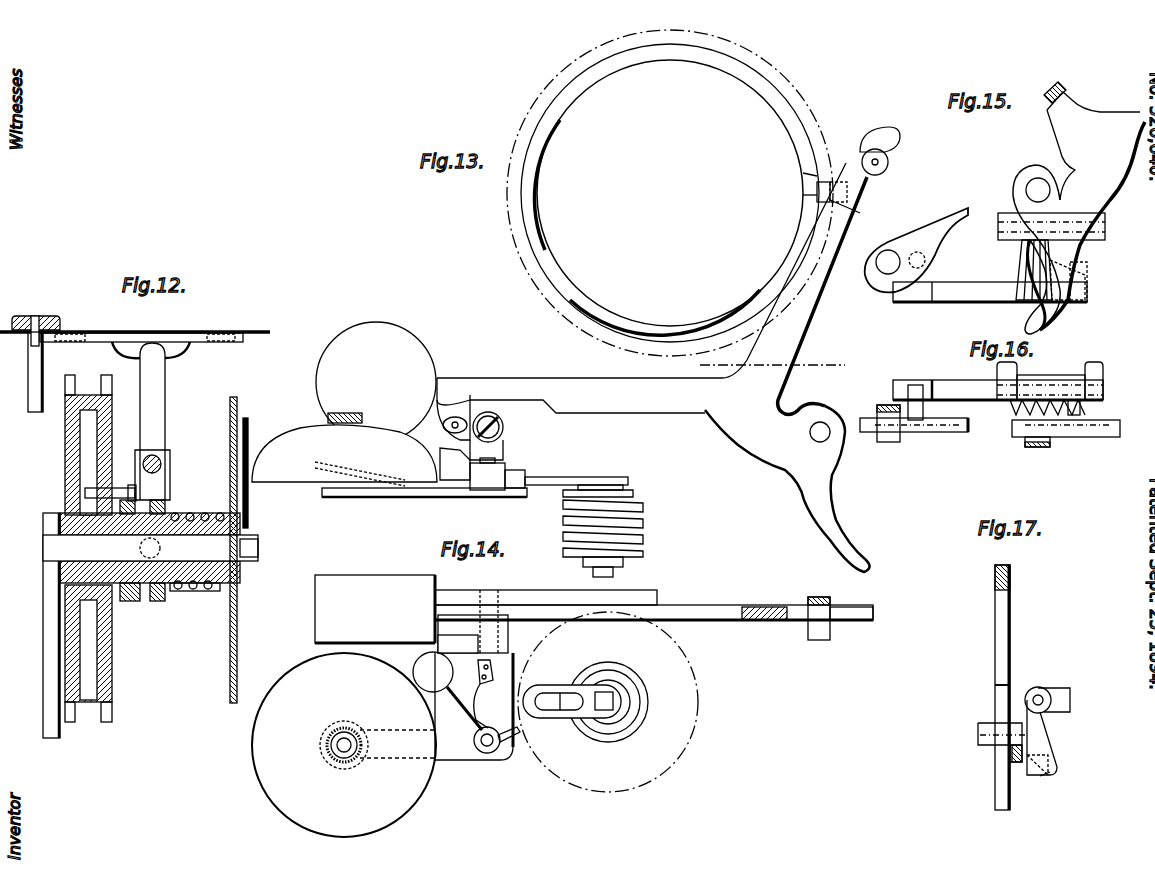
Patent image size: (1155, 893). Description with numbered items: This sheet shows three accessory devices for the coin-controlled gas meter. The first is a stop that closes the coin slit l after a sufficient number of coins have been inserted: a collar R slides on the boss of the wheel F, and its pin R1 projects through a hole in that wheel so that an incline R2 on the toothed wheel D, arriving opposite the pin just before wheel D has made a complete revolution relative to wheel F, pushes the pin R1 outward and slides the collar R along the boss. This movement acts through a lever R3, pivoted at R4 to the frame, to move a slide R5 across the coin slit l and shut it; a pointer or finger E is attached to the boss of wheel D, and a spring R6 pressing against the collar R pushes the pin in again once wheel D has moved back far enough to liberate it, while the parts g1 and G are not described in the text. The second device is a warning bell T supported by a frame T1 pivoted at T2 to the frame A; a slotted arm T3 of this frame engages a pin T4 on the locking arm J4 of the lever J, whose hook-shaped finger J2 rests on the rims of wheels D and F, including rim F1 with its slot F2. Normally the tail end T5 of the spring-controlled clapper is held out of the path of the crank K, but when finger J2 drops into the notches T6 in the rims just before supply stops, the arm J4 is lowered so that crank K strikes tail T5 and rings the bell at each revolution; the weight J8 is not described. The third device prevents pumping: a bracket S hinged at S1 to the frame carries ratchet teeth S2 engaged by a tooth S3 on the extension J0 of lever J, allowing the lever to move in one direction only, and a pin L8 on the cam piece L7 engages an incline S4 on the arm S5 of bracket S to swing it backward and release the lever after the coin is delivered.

In FIG. 12, the coin slit l is at (35, 320).
In FIG. 12, the hanger bar g1 is at (28, 382).
In FIG. 12, the slide R5 is at (112, 343).
In FIG. 12, the lever R3 is at (158, 399).
In FIG. 12, the pivot R4 is at (161, 464).
In FIG. 12, the toothed wheel D is at (66, 450).
In FIG. 12, the wheel F is at (105, 398).
In FIG. 12, the pin R1 is at (112, 487).
In FIG. 12, the collar R is at (160, 507).
In FIG. 12, the pointer or finger E is at (240, 522).
In FIG. 12, the incline R2 is at (88, 610).
In FIG. 12, the spring R6 is at (176, 592).
In FIG. 12, the frame bar G is at (230, 652).
In FIG. 13, the rim or flange F1 is at (776, 97).
In FIG. 13, the slot or groove F2 is at (820, 182).
In FIG. 13, the hook-shaped finger J2 is at (815, 190).
In FIG. 13, the notches or depressions T6 is at (852, 210).
In FIG. 15, the notches or depressions T6 is at (880, 173).
In FIG. 13, the lever J is at (794, 281).
In FIG. 14, the lever J is at (758, 620).
In FIG. 15, the lever J is at (1079, 208).
In FIG. 16, the lever J is at (1102, 428).
In FIG. 17, the lever J is at (1000, 627).
In FIG. 13, the extension of lever J J0 is at (803, 512).
In FIG. 14, the extension of lever J J0 is at (868, 620).
In FIG. 15, the extension of lever J J0 is at (1048, 285).
In FIG. 17, the extension of lever J J0 is at (1000, 790).
In FIG. 13, the locking arm J4 is at (579, 395).
In FIG. 14, the locking arm J4 is at (590, 612).
In FIG. 13, the weight J8 is at (376, 382).
In FIG. 14, the weight J8 is at (375, 609).
In FIG. 13, the bell T is at (344, 449).
In FIG. 14, the bell T is at (344, 745).
In FIG. 13, the bell frame T1 is at (358, 490).
In FIG. 14, the bell frame T1 is at (448, 750).
In FIG. 13, the pivot T2 is at (503, 428).
In FIG. 13, the slotted arm T3 is at (451, 415).
In FIG. 14, the slotted arm T3 is at (450, 615).
In FIG. 13, the pin T4 is at (450, 455).
In FIG. 14, the pin T4 is at (440, 665).
In FIG. 13, the tail end of clapper T5 is at (516, 489).
In FIG. 14, the tail end of clapper T5 is at (517, 732).
In FIG. 13, the crank K is at (548, 478).
In FIG. 14, the crank K is at (536, 690).
In FIG. 14, the frame A is at (527, 590).
In FIG. 15, the cam piece L7 is at (922, 230).
In FIG. 16, the cam piece L7 is at (950, 428).
In FIG. 15, the pin L8 is at (925, 262).
In FIG. 16, the pin L8 is at (923, 411).
In FIG. 16, the bracket S is at (1060, 380).
In FIG. 17, the bracket S is at (1043, 738).
In FIG. 16, the hinge S1 is at (1103, 385).
In FIG. 17, the hinge S1 is at (1038, 695).
In FIG. 15, the ratchet teeth S2 is at (1032, 275).
In FIG. 16, the ratchet teeth S2 is at (1012, 406).
In FIG. 17, the ratchet teeth S2 is at (1024, 775).
In FIG. 15, the tooth S3 is at (1082, 285).
In FIG. 16, the tooth S3 is at (1083, 410).
In FIG. 17, the tooth S3 is at (1010, 752).
In FIG. 15, the incline S4 is at (925, 302).
In FIG. 16, the incline S4 is at (893, 390).
In FIG. 17, the incline S4 is at (1055, 778).
In FIG. 15, the arm of bracket S5 is at (975, 290).
In FIG. 16, the arm of bracket S5 is at (953, 388).